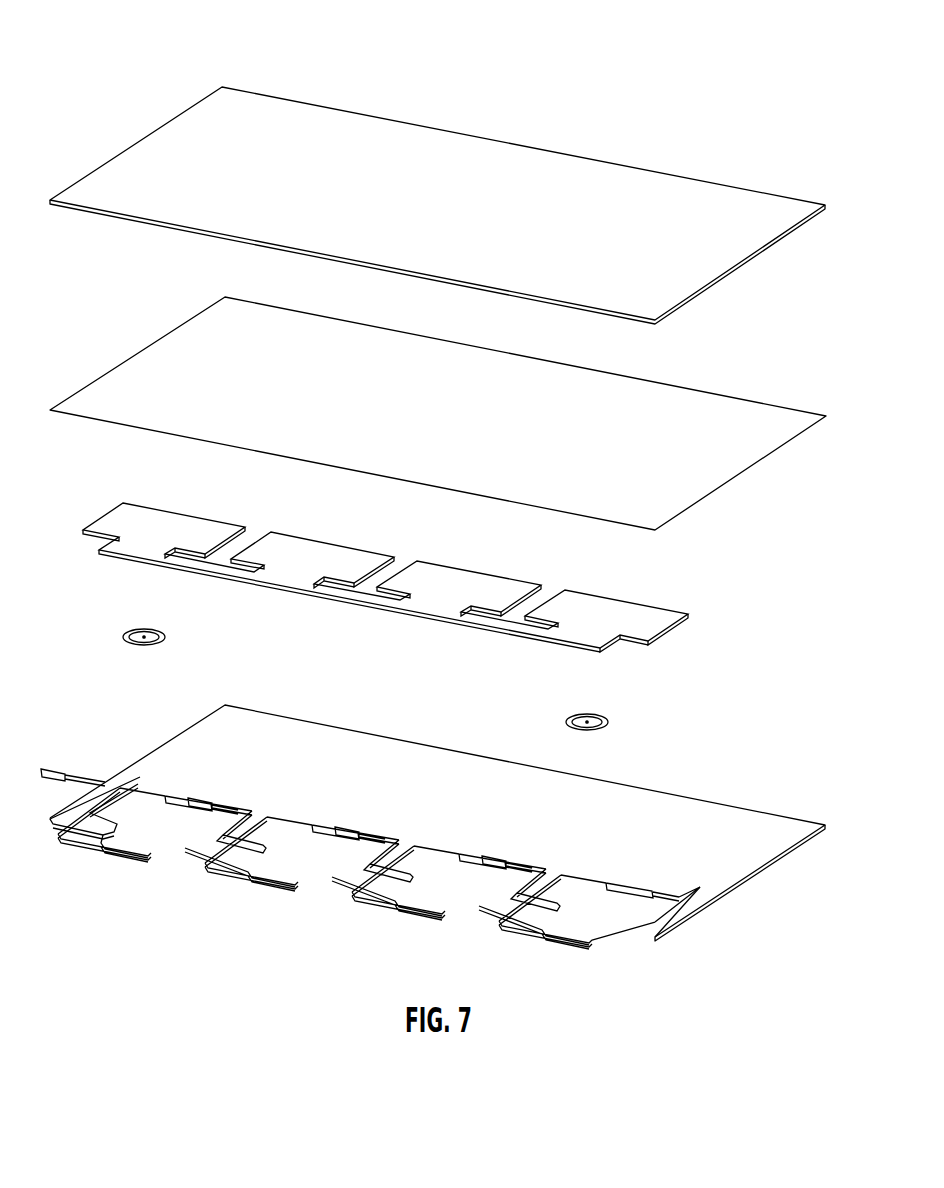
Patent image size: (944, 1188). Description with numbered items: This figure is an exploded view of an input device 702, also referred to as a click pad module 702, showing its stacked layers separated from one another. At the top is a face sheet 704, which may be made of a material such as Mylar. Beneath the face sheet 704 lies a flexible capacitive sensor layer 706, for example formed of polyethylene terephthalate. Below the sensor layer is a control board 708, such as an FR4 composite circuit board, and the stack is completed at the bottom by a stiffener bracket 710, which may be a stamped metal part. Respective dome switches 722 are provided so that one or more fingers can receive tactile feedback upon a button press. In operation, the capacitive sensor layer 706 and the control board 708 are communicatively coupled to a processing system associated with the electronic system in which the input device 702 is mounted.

The input device 702 is at (109, 44).
The face sheet 704 is at (751, 215).
The flexible capacitive sensor layer 706 is at (751, 432).
The control board 708 is at (651, 628).
The stiffener bracket 710 is at (751, 840).
The dome switch 722 is at (144, 634).